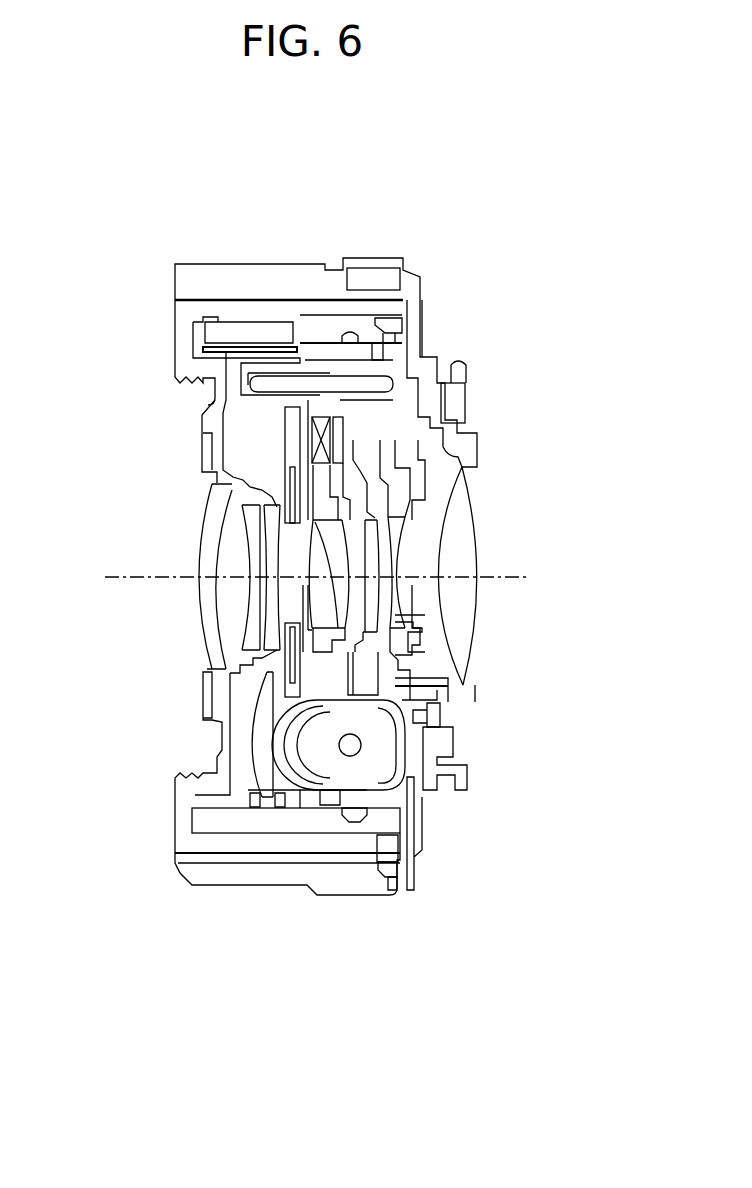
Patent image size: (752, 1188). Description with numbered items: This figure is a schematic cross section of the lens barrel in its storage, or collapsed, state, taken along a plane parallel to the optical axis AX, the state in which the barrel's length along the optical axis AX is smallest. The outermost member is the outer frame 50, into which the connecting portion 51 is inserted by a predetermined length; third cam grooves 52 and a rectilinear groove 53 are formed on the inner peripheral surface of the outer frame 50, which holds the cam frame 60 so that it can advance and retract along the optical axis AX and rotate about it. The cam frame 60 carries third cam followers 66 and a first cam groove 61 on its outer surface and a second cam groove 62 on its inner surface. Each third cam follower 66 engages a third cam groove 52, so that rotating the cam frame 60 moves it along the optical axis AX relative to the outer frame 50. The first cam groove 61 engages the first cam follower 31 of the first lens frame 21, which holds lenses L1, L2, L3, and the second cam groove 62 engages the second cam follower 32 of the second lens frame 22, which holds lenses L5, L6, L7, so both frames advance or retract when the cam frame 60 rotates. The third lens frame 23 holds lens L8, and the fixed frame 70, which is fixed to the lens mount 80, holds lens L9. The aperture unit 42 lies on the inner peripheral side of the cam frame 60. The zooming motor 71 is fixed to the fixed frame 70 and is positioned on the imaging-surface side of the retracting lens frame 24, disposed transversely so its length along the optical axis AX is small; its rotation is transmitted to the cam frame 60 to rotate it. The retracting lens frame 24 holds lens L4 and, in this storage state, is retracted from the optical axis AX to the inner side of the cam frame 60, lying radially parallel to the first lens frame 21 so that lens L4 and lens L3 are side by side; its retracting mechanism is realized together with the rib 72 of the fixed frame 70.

The first lens frame 21 is at (191, 308).
The second lens frame 22 is at (293, 347).
The third lens frame 23 is at (395, 665).
The retracting lens frame 24 is at (254, 803).
The first cam follower 31 is at (387, 323).
The second cam follower 32 is at (348, 335).
The aperture unit 42 is at (290, 432).
The outer frame 50 is at (188, 275).
The connecting portion 51 is at (386, 270).
The third cam groove 52 is at (375, 868).
The rectilinear groove 53 is at (197, 860).
The cam frame 60 is at (237, 328).
The first cam groove 61 is at (402, 320).
The second cam groove 62 is at (360, 333).
The third cam follower 66 is at (387, 848).
The fixed frame 70 is at (405, 687).
The zooming motor 71 is at (383, 768).
The rib 72 is at (293, 798).
The lens mount 80 is at (420, 367).
The optical axis AX is at (513, 577).
The lens L1 is at (210, 517).
The lens L2 is at (255, 518).
The lens L3 is at (330, 588).
The lens L4 is at (270, 737).
The lens L5 is at (262, 610).
The lens L6 is at (318, 619).
The lens L7 is at (463, 558).
The lens L8 is at (348, 672).
The lens L9 is at (372, 547).